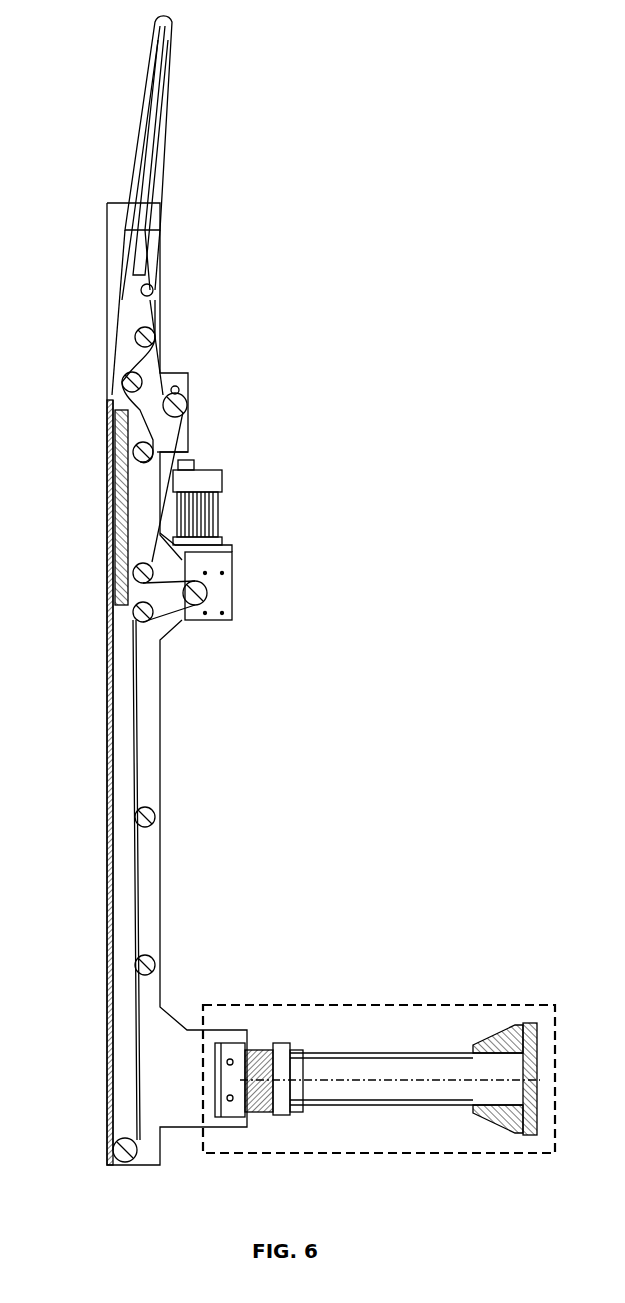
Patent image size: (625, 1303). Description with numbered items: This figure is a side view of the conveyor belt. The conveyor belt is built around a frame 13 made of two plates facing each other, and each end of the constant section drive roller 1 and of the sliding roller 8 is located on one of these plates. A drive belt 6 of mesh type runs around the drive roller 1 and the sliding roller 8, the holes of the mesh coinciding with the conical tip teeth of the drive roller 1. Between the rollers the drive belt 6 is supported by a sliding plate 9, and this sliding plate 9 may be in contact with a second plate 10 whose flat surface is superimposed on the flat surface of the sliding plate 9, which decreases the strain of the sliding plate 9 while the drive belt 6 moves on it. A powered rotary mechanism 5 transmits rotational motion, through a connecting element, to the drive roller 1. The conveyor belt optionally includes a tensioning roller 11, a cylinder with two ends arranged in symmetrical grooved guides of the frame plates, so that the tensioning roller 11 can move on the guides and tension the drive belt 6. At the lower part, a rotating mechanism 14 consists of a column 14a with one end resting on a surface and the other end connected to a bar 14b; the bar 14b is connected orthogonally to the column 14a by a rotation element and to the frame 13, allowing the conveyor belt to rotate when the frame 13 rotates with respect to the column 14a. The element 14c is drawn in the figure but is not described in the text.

The drive roller 1 is at (200, 593).
The powered rotary mechanism 5 is at (207, 510).
The drive belt 6 is at (107, 745).
The sliding roller 8 is at (115, 1152).
The sliding plate 9 is at (118, 492).
The second plate 10 is at (145, 155).
The tensioning roller 11 is at (183, 398).
The frame 13 is at (150, 878).
The rotating mechanism 14 is at (375, 1005).
The column 14a is at (447, 1053).
The bar 14b is at (283, 1117).
The mounting bracket 14c is at (240, 1043).